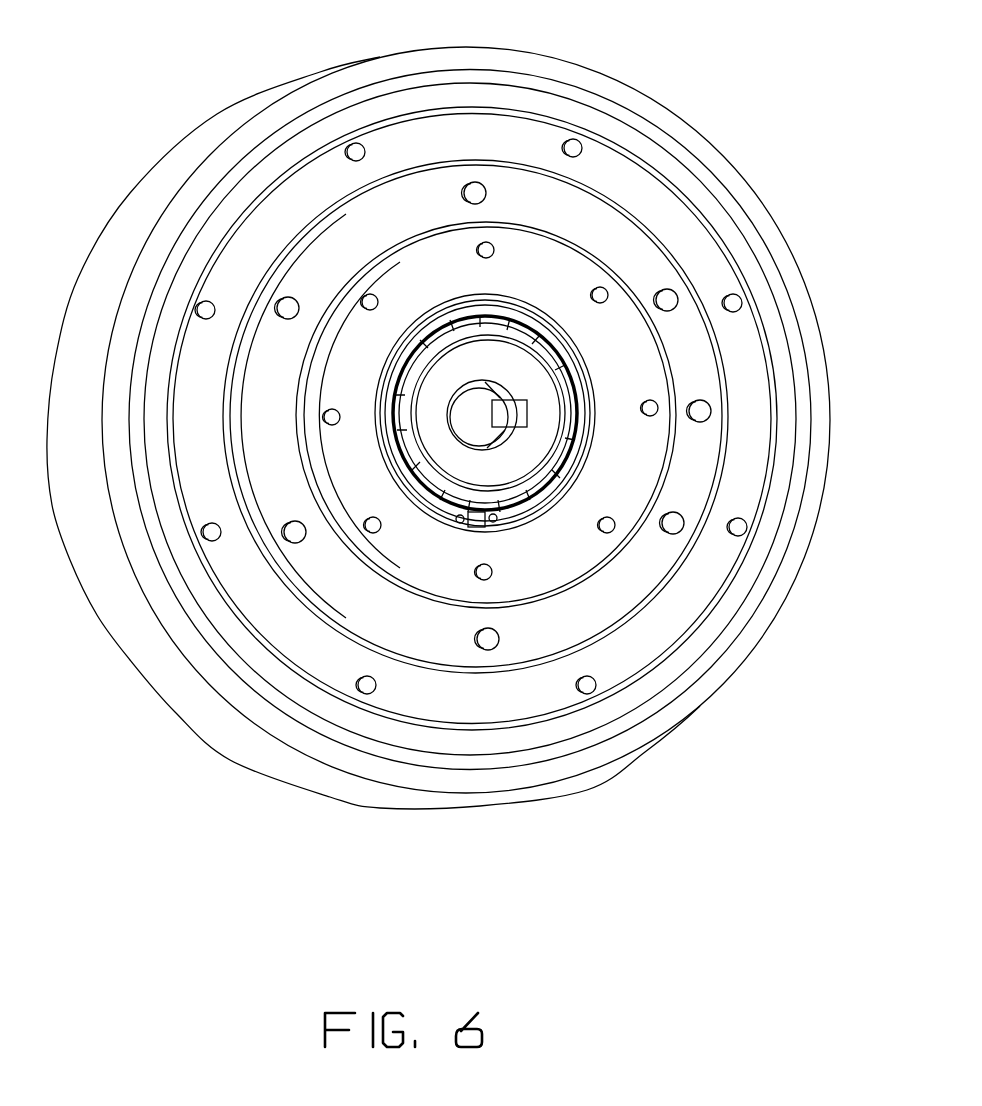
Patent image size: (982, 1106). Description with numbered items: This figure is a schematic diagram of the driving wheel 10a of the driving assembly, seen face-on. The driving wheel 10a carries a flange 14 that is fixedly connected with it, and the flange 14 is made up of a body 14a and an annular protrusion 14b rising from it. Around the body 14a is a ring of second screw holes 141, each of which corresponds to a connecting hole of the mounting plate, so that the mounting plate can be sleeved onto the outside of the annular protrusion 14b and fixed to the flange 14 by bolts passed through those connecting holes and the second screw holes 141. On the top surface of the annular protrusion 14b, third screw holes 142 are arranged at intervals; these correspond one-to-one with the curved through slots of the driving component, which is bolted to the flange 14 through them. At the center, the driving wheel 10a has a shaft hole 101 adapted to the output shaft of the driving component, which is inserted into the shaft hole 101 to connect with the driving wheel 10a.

The driving wheel 10a is at (228, 153).
The flange 14 is at (431, 336).
The body 14a is at (382, 341).
The annular protrusion 14b is at (572, 322).
The second screw hole 141 is at (287, 525).
The third screw holes 142 is at (614, 518).
The shaft hole 101 is at (498, 421).